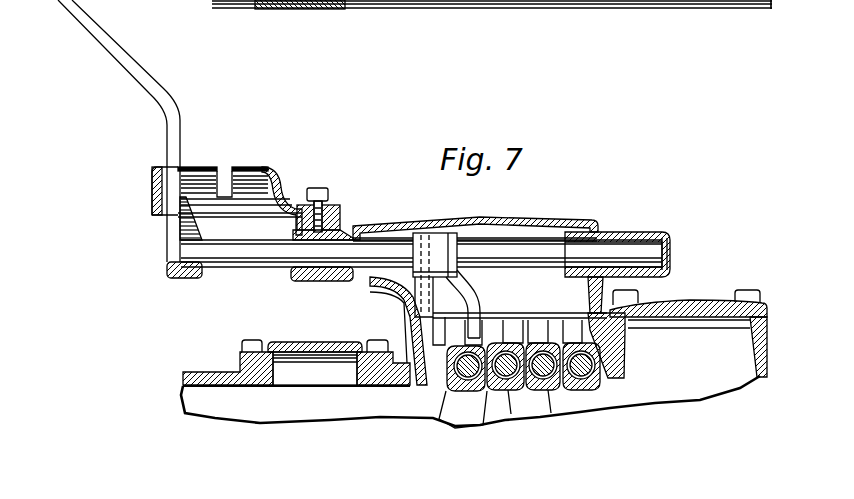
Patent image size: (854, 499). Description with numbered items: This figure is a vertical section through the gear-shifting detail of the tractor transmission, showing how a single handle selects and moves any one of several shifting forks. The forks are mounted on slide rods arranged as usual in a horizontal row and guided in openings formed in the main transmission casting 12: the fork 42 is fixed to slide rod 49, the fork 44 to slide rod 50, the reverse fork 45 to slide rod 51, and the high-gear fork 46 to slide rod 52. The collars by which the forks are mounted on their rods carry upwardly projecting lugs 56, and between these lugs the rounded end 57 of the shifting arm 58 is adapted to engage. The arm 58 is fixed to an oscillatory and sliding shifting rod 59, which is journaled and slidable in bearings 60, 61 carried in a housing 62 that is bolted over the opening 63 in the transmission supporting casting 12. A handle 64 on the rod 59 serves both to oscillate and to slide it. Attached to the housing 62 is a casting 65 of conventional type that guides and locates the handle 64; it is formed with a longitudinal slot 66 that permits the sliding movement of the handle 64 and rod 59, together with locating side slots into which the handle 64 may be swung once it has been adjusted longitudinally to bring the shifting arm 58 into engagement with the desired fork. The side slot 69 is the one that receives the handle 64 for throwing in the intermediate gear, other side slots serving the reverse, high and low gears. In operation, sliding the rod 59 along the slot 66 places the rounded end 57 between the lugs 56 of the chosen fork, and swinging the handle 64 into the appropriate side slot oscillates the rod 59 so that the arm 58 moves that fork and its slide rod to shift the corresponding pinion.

The casting 12 is at (210, 414).
The fork 42 is at (561, 393).
The fork 44 is at (602, 383).
The fork 45 is at (457, 420).
The fork 46 is at (520, 391).
The slide rod 49 is at (537, 392).
The slide rod 50 is at (575, 392).
The slide rod 51 is at (447, 382).
The slide rod 52 is at (500, 393).
The lug 56 is at (560, 322).
The rounded end 57 is at (416, 318).
The shifting arm 58 is at (452, 243).
The shifting rod 59 is at (256, 270).
The bearing 60 is at (309, 281).
The bearing 61 is at (662, 232).
The housing 62 is at (553, 223).
The opening 63 is at (400, 296).
The handle 64 is at (103, 45).
The casting 65 is at (270, 167).
The longitudinal slot 66 is at (203, 167).
The side slot 69 is at (229, 168).